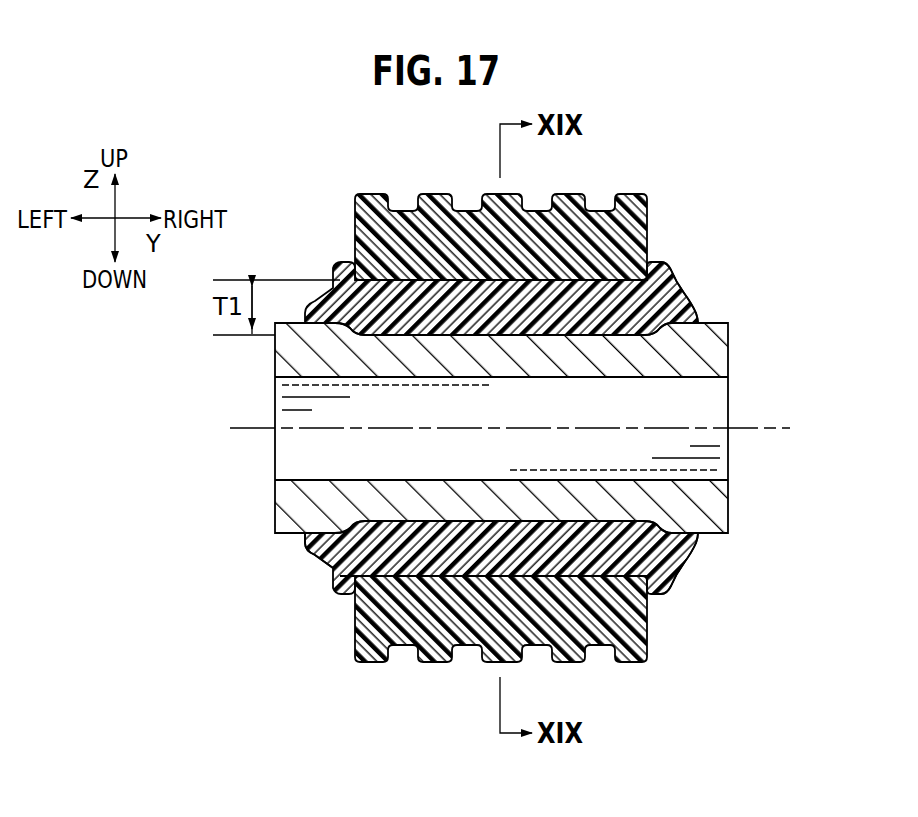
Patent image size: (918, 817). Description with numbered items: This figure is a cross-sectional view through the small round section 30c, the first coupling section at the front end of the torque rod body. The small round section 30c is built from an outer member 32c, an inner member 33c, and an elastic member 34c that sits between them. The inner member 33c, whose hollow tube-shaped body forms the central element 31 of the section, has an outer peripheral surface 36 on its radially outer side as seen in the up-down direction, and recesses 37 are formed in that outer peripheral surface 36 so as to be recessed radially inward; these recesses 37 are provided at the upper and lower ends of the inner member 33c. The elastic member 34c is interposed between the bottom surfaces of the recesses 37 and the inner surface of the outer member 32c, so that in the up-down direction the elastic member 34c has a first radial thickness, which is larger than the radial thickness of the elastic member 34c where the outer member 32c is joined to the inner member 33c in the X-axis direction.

The inner cylinder (tube) 31 is at (243, 415).
The small round section 30c is at (575, 428).
The outer member 32c is at (623, 227).
The elastic member 34c is at (665, 270).
The inner member 33c is at (717, 428).
The outer peripheral surface 36 is at (291, 533).
The recesses 37 is at (405, 333).